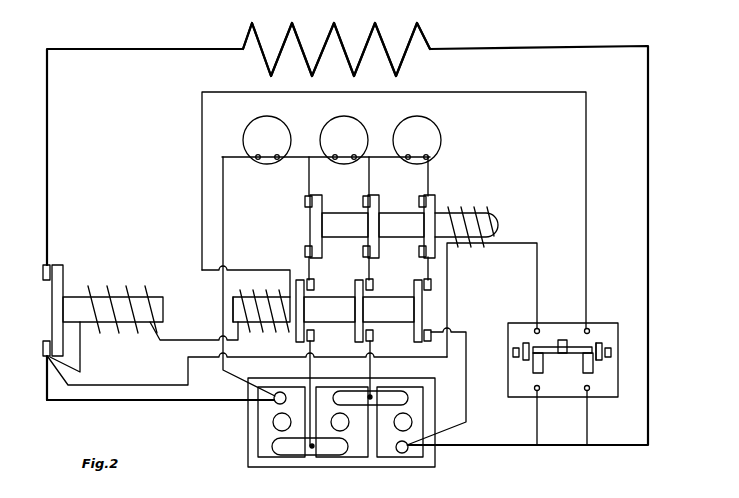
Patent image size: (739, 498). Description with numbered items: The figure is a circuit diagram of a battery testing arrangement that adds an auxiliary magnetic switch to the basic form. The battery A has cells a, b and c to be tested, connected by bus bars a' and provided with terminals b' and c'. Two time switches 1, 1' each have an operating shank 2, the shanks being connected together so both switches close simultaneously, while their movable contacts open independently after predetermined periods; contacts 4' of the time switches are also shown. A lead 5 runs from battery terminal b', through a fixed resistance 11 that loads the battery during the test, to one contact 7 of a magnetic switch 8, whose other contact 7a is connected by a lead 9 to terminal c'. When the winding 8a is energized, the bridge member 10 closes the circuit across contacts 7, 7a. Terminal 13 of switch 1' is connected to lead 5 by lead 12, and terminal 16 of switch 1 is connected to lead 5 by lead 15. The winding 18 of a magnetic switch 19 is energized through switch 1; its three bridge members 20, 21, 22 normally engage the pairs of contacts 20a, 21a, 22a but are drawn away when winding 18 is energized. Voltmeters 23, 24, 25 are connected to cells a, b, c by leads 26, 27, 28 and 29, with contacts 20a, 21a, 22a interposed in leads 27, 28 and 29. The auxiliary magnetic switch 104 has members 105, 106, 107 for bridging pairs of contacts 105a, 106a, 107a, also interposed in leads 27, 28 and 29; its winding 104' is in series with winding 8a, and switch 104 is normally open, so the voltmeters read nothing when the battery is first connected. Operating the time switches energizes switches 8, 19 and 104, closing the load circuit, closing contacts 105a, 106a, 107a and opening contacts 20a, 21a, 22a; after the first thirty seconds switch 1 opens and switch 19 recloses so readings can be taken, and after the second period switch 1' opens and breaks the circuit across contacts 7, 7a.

The time switch 1 is at (553, 360).
The time switch 1' is at (616, 366).
The operating shank or lever 2 is at (578, 360).
The contacts 4' is at (564, 358).
The lead 5 is at (649, 369).
The contact 7 is at (43, 273).
The contact 7a is at (43, 350).
The magnetic switch 8 is at (113, 302).
The winding 8a is at (150, 331).
The lead 9 is at (128, 402).
The bridge member 10 is at (52, 316).
The resistance 11 is at (265, 42).
The lead 12 is at (587, 425).
The terminal 13 is at (588, 392).
The lead 15 is at (537, 425).
The terminal 16 is at (536, 392).
The winding 18 is at (483, 211).
The magnetic switch 19 is at (486, 285).
The bridge member 20 is at (309, 225).
The pair of contacts 20a is at (304, 203).
The bridge member 21 is at (350, 226).
The pair of contacts 21a is at (362, 203).
The bridge member 22 is at (424, 231).
The pair of contacts 22a is at (419, 201).
The voltmeter 23 is at (249, 124).
The voltmeter 24 is at (329, 124).
The voltmeter 25 is at (404, 124).
The lead 26 is at (223, 179).
The lead 27 is at (309, 179).
The lead 28 is at (369, 179).
The lead 29 is at (428, 179).
The auxiliary magnetic switch 104 is at (261, 302).
The winding 104' is at (216, 307).
The bridging member 105 is at (296, 337).
The pair of contacts 105a is at (313, 285).
The bridging member 106 is at (355, 333).
The pair of contacts 106a is at (373, 285).
The bridging member 107 is at (422, 318).
The pair of contacts 107a is at (410, 347).
The battery A is at (341, 435).
The cell a is at (258, 422).
The bus bar a' is at (315, 410).
The cell b is at (340, 452).
The terminal b' is at (416, 466).
The cell c is at (391, 452).
The terminal c' is at (278, 383).